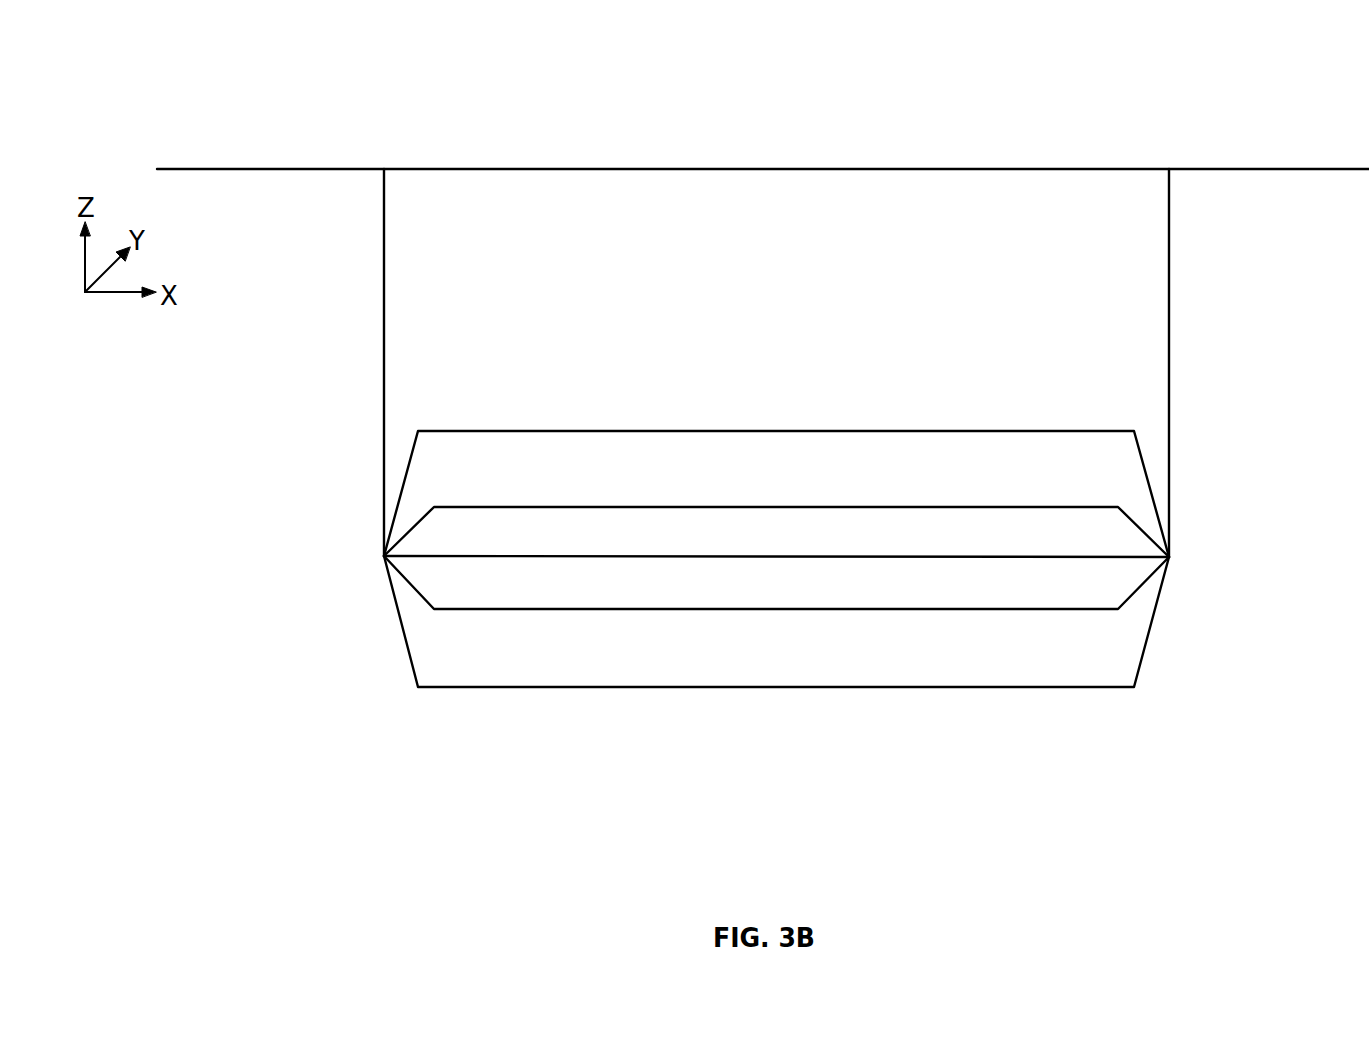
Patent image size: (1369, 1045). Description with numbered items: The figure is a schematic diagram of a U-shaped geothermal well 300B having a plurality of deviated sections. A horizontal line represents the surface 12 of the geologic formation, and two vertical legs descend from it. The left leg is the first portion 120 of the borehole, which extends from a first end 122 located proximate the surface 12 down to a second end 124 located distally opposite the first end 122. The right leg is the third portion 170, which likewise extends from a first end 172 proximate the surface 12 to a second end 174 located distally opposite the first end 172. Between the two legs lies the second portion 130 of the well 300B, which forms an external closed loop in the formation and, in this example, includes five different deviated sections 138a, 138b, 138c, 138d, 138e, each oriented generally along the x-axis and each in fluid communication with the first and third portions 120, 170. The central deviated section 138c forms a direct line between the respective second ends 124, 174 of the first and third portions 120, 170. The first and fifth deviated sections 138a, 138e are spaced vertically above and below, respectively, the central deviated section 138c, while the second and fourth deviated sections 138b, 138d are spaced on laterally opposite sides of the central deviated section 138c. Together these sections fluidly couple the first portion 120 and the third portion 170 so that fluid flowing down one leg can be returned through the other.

The U-shaped well 300B is at (572, 66).
The surface 12 is at (937, 169).
The first portion 120 is at (384, 312).
The first end 122 is at (383, 168).
The second end 124 is at (384, 556).
The third portion 170 is at (1169, 312).
The first end 172 is at (1169, 168).
The second end 174 is at (1169, 557).
The second portion 130 is at (492, 724).
The first deviated section 138a is at (938, 433).
The second deviated section 138b is at (632, 510).
The central deviated section 138c is at (875, 560).
The fourth deviated section 138d is at (586, 612).
The fifth deviated section 138e is at (881, 690).